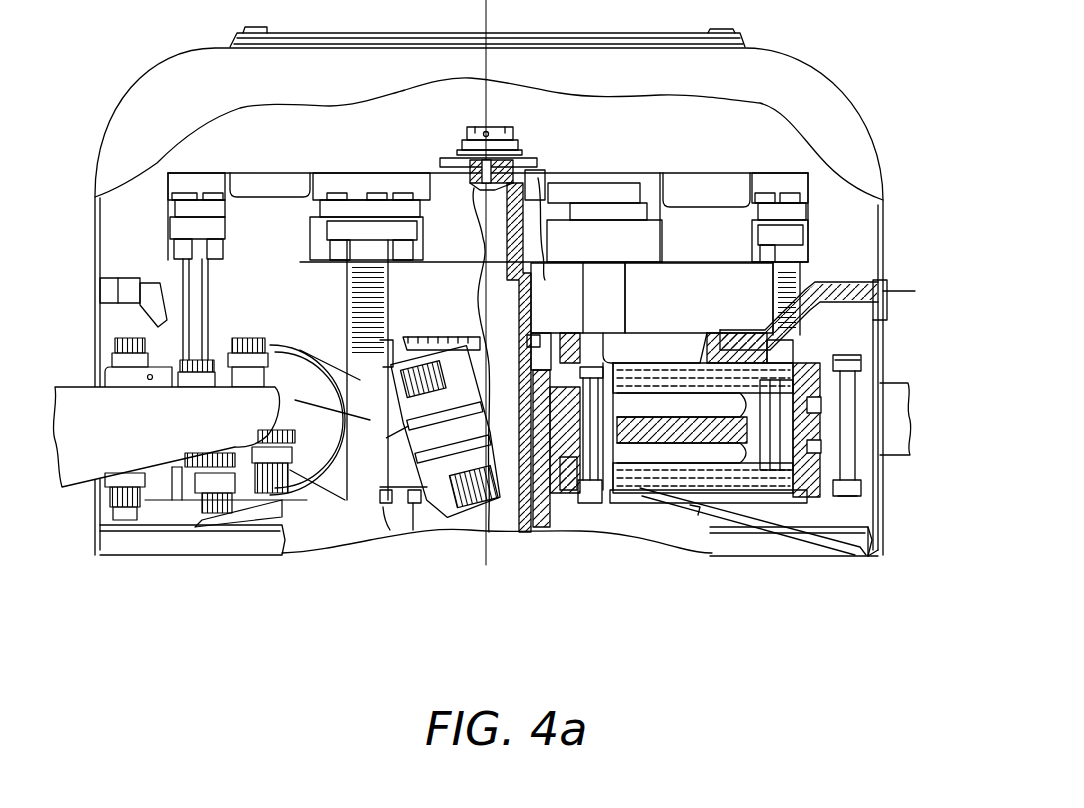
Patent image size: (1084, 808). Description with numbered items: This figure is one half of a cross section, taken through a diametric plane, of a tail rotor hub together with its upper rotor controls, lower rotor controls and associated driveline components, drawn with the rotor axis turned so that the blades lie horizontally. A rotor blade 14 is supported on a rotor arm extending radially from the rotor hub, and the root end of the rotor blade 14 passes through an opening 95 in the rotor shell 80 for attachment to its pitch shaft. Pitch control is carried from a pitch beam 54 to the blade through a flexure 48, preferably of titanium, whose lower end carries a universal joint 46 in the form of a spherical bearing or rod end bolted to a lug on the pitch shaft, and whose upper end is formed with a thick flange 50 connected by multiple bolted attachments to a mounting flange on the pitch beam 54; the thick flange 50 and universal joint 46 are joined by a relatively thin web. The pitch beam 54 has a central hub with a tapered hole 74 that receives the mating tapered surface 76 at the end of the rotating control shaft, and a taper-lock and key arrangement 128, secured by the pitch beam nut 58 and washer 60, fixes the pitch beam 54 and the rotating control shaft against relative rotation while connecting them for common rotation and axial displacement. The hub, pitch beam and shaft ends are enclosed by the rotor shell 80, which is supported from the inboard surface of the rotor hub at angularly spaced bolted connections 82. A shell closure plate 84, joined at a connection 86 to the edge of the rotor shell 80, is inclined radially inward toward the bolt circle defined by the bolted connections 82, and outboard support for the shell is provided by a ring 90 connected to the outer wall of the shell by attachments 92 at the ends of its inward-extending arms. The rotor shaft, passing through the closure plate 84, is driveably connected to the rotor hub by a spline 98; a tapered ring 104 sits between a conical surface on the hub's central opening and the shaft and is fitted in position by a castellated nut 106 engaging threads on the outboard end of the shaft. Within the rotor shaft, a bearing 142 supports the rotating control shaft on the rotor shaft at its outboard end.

The rotor blade 14 is at (892, 410).
The universal joint 46 is at (370, 460).
The flexure 48 is at (200, 297).
The thick flange 50 is at (798, 227).
The pitch beam 54 is at (684, 178).
The pitch beam nut 58 is at (462, 148).
The washer 60 is at (448, 163).
The tapered hole 74 is at (523, 220).
The tapered surface 76 is at (540, 205).
The rotor shell 80 is at (852, 97).
The bolted connections 82 is at (420, 355).
The shell closure plate 84 is at (792, 547).
The connection 86 is at (878, 556).
The ring 90 is at (148, 300).
The attachments 92 is at (110, 291).
The openings 95 is at (876, 353).
The spline 98 is at (552, 420).
The tapered ring 104 is at (575, 370).
The castellated nut 106 is at (470, 345).
The taper-lock and key arrangement 128 is at (537, 200).
The bearing 142 is at (530, 365).